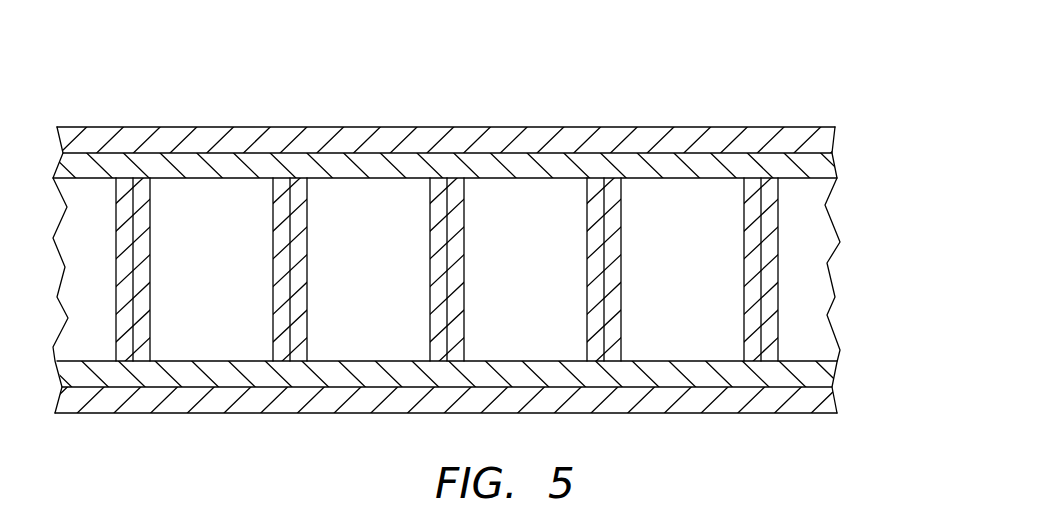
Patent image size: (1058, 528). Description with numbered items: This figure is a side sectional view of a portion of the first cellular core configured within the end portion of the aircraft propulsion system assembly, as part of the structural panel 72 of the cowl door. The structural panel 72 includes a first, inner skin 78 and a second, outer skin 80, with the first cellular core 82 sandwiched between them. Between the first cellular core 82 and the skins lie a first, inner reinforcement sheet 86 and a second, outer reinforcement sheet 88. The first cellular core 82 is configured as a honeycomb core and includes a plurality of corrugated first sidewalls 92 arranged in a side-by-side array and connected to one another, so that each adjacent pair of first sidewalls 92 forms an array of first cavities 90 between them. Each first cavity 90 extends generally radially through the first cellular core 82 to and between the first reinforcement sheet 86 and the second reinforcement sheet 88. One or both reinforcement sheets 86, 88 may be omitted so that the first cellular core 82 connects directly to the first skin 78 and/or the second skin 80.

The structural panel 72 is at (702, 94).
The first skin 78 is at (842, 410).
The second skin 80 is at (840, 135).
The first cellular core 82 is at (855, 253).
The first reinforcement sheet 86 is at (842, 373).
The second reinforcement sheet 88 is at (842, 161).
The first cavities 90 is at (223, 278).
The first sidewalls 92 is at (743, 308).